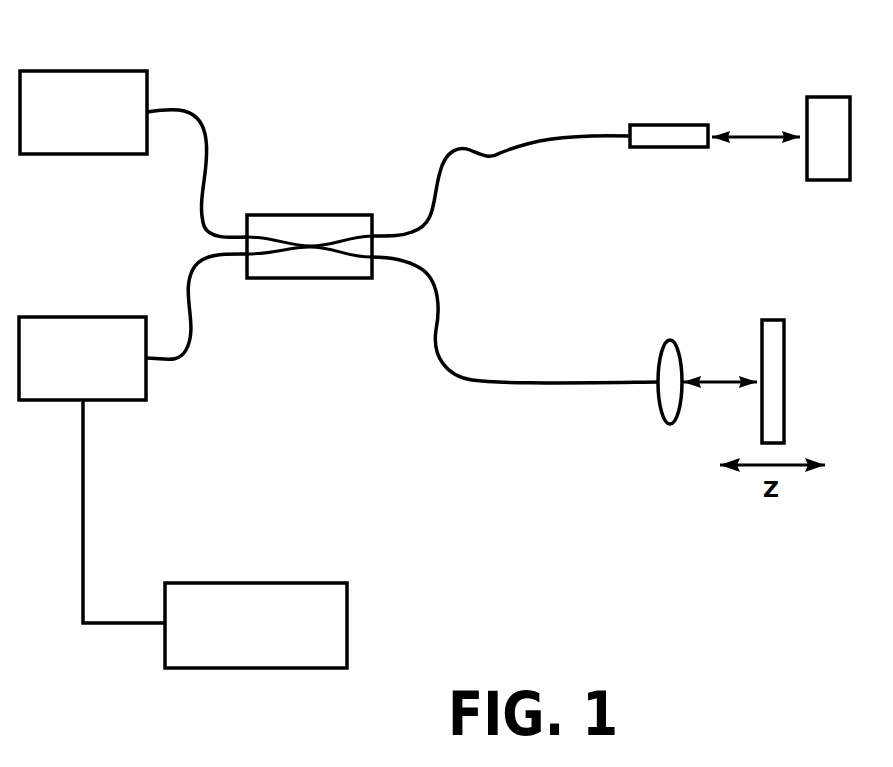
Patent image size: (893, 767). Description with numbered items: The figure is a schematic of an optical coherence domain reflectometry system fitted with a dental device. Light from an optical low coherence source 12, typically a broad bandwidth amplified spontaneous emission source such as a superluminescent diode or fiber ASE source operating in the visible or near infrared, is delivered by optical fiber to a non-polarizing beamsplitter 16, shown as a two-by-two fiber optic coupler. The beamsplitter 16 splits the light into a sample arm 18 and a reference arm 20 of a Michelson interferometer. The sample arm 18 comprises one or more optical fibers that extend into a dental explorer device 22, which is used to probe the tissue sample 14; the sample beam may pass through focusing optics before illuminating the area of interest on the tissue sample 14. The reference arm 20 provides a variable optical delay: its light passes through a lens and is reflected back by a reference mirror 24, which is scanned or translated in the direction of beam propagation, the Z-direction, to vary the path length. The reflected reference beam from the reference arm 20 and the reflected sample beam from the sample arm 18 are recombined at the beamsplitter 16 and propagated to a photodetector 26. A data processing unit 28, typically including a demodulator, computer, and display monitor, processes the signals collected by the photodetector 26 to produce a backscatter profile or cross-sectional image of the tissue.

The optical low coherence source 12 is at (62, 121).
The tissue sample 14 is at (813, 154).
The non-polarizing beamsplitter 16 is at (292, 213).
The sample arm 18 is at (518, 130).
The reference arm 20 is at (497, 408).
The dental explorer device 22 is at (653, 123).
The reference mirror 24 is at (775, 318).
The photodetector 26 is at (62, 371).
The data processing unit 28 is at (228, 641).